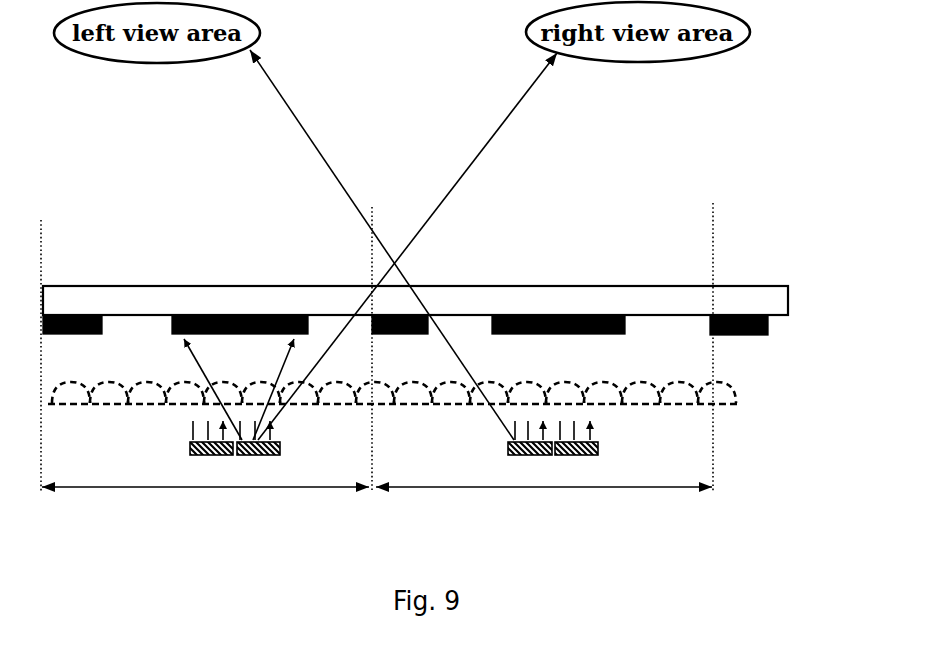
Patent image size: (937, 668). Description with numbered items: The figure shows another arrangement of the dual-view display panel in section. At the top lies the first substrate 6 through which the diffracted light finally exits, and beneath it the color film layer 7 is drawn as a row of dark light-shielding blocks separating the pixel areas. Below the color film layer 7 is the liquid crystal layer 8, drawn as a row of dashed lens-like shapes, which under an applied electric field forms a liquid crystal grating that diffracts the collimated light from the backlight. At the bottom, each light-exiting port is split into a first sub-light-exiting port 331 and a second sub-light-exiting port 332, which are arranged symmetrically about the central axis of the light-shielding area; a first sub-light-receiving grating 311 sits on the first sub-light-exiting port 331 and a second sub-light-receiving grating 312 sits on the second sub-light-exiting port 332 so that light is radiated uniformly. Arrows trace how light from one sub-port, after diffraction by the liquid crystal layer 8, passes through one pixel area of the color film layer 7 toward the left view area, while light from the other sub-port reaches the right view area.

The first substrate 6 is at (777, 303).
The color film layer 7 is at (768, 331).
The liquid crystal layer 8 is at (742, 399).
The first sub-light-receiving grating 311 is at (190, 444).
The second sub-light-receiving grating 312 is at (280, 444).
The first sub-light-exiting port 331 is at (213, 461).
The second sub-light-exiting port 332 is at (263, 462).